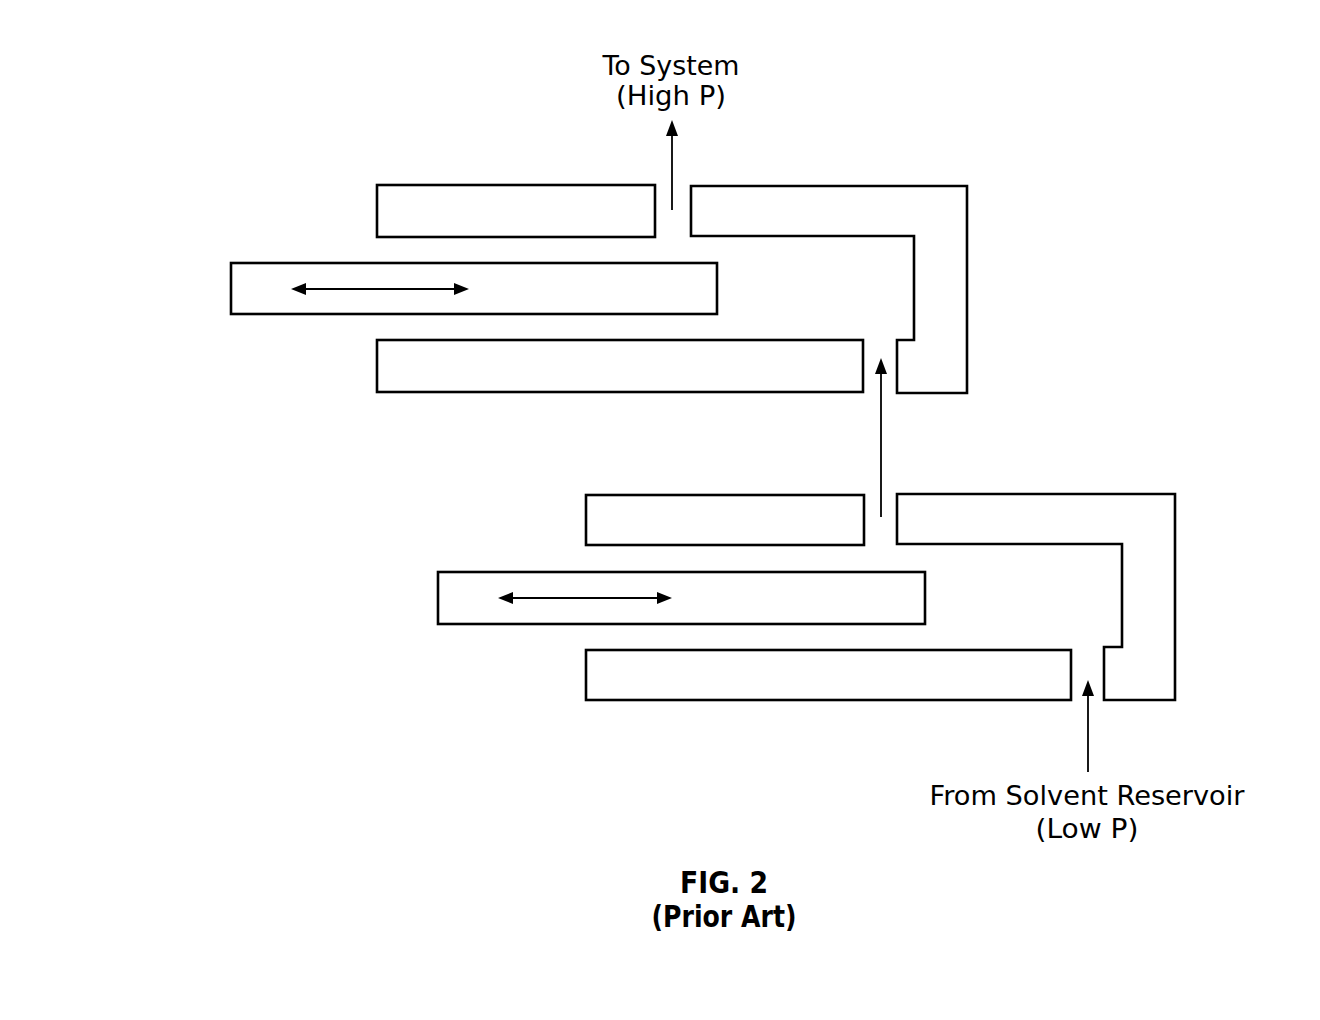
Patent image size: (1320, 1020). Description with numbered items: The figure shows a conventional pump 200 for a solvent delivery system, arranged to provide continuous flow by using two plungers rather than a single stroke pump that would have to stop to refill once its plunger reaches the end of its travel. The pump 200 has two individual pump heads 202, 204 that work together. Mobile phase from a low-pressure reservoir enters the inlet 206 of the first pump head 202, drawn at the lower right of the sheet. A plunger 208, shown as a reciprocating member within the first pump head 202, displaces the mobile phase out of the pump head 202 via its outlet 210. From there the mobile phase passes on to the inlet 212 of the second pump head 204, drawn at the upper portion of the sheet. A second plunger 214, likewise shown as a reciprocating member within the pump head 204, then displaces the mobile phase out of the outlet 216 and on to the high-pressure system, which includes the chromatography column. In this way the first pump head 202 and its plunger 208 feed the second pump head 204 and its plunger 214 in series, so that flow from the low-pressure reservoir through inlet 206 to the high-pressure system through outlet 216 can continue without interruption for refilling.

The pump 200 is at (333, 52).
The pump head 202 is at (1176, 598).
The pump head 204 is at (968, 290).
The inlet 206 is at (1101, 702).
The plunger 208 is at (437, 598).
The outlet 210 is at (888, 504).
The inlet 212 is at (887, 383).
The plunger 214 is at (253, 316).
The outlet 216 is at (686, 185).